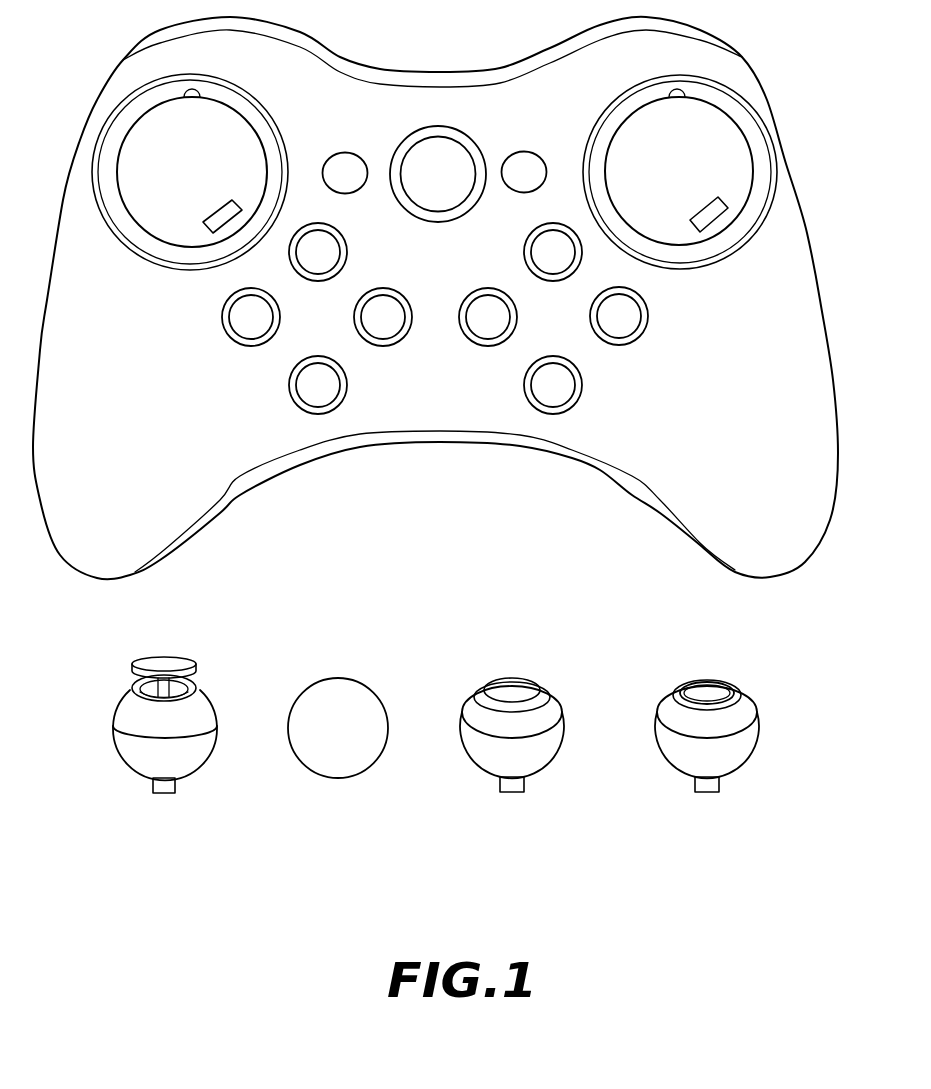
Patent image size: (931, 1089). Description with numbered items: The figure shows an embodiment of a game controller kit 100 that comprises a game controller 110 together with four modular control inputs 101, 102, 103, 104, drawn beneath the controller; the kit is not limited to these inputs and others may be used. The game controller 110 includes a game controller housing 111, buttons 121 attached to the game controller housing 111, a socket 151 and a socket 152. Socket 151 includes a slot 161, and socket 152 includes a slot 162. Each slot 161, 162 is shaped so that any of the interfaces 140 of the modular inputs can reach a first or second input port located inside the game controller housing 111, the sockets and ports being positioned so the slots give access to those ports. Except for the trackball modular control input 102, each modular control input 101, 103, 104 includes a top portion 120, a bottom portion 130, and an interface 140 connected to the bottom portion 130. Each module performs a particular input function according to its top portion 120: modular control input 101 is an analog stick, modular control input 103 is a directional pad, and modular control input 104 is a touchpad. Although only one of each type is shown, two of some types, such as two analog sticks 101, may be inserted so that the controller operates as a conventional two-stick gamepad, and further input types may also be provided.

The game controller kit 100 is at (437, 473).
The game controller 110 is at (226, 510).
The game controller housing 111 is at (440, 70).
The buttons 121 is at (517, 175).
The socket 151 is at (133, 133).
The socket 152 is at (733, 118).
The slot 161 is at (243, 212).
The slot 162 is at (726, 198).
The modular control input 101 is at (168, 744).
The top portion 120 is at (225, 658).
The bottom portion 130 is at (225, 718).
The interface 140 is at (172, 788).
The trackball modular control input 102 is at (370, 700).
The modular control input 103 is at (472, 753).
The modular control input 104 is at (663, 743).